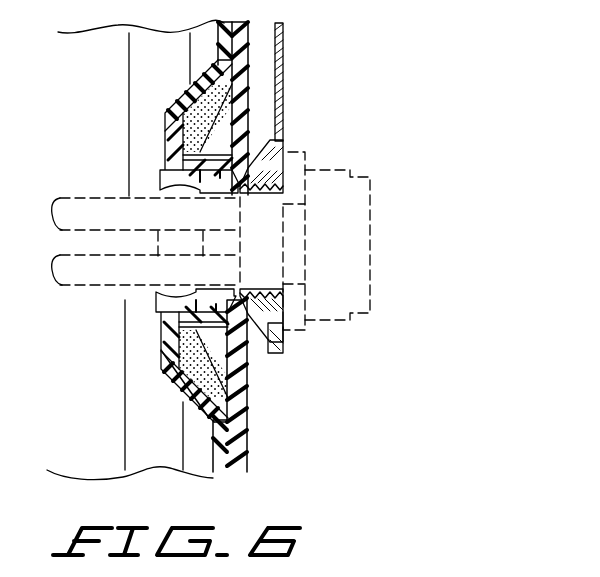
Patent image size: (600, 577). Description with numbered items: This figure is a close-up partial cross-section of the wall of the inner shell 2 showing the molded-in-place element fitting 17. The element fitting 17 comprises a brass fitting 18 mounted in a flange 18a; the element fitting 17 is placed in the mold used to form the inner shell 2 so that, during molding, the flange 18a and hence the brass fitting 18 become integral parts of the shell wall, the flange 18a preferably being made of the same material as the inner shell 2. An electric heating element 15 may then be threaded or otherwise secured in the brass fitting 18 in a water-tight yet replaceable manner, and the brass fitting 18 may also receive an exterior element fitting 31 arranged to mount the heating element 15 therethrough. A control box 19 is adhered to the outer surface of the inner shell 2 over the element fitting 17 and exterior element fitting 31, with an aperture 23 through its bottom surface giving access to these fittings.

The inner shell 2 is at (225, 23).
The electric heating element 15 is at (372, 218).
The element fitting 17 is at (170, 378).
The brass fitting 18 is at (170, 153).
The flange 18a is at (195, 108).
The control box 19 is at (250, 35).
The aperture 23 is at (250, 156).
The exterior element fitting 31 is at (264, 354).